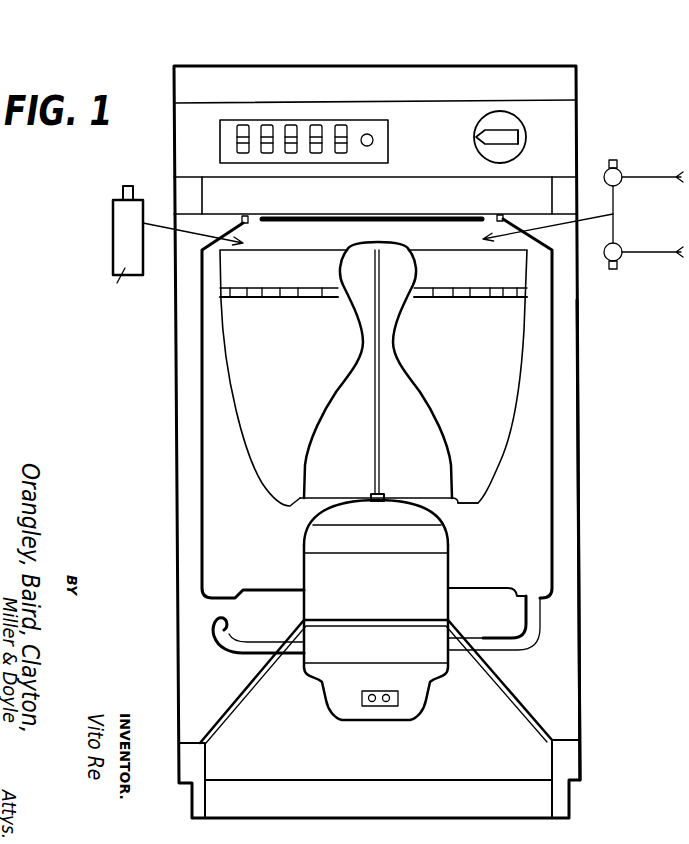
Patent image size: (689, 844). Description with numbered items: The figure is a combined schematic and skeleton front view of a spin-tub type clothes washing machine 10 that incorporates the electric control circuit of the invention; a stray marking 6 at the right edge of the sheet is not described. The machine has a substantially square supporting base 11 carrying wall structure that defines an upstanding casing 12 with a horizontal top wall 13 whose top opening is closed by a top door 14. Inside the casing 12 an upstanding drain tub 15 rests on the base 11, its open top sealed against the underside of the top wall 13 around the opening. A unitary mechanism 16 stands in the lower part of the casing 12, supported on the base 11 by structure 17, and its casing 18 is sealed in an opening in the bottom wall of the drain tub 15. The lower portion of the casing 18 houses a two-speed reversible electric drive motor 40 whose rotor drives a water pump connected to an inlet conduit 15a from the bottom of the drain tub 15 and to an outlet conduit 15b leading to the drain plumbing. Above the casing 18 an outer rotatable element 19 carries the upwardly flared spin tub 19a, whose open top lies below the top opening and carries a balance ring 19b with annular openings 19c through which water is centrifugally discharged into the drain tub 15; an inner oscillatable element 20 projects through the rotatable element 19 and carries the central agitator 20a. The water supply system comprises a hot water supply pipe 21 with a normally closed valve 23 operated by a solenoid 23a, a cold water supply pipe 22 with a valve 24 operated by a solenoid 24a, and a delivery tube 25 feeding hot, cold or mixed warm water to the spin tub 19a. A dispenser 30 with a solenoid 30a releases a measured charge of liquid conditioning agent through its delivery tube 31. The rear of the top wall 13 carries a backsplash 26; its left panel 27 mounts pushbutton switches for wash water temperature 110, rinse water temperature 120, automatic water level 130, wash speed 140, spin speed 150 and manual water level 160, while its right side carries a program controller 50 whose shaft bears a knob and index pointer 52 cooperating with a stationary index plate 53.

The sheet marking 6 is at (682, 685).
The clothes washing machine 10 is at (589, 412).
The supporting base 11 is at (198, 764).
The casing 12 is at (582, 572).
The top wall 13 is at (213, 214).
The top door 14 is at (345, 213).
The drain tub 15 is at (202, 567).
The inlet conduit 15a is at (507, 645).
The outlet conduit 15b is at (223, 632).
The unitary mechanism 16 is at (385, 600).
The supporting structure 17 is at (243, 702).
The casing 18 is at (433, 573).
The outer rotatable element 19 is at (377, 517).
The spin tub 19a is at (480, 503).
The balance ring 19b is at (255, 273).
The annular openings 19c is at (442, 297).
The inner oscillatable element 20 is at (381, 495).
The agitator 20a is at (428, 420).
The hot water supply pipe 21 is at (653, 181).
The cold water supply pipe 22 is at (653, 258).
The valve 23 is at (608, 168).
The solenoid 23a is at (617, 160).
The valve 24 is at (607, 250).
The solenoid 24a is at (614, 272).
The delivery tube 25 is at (613, 214).
The backsplash 26 is at (173, 143).
The panel 27 is at (378, 154).
The dispenser 30 is at (113, 237).
The solenoid 30a is at (128, 185).
The delivery tube 31 is at (161, 228).
The electric drive motor 40 is at (402, 707).
The program controller 50 is at (502, 126).
The knob and index pointer 52 is at (484, 140).
The index plate 53 is at (517, 146).
The wash water temperature control switch 110 is at (237, 128).
The rinse water temperature control switch 120 is at (270, 132).
The automatic water level control switch 130 is at (287, 132).
The wash speed control switch 140 is at (314, 130).
The spin speed control switch 150 is at (345, 132).
The manual water level control switch 160 is at (373, 134).